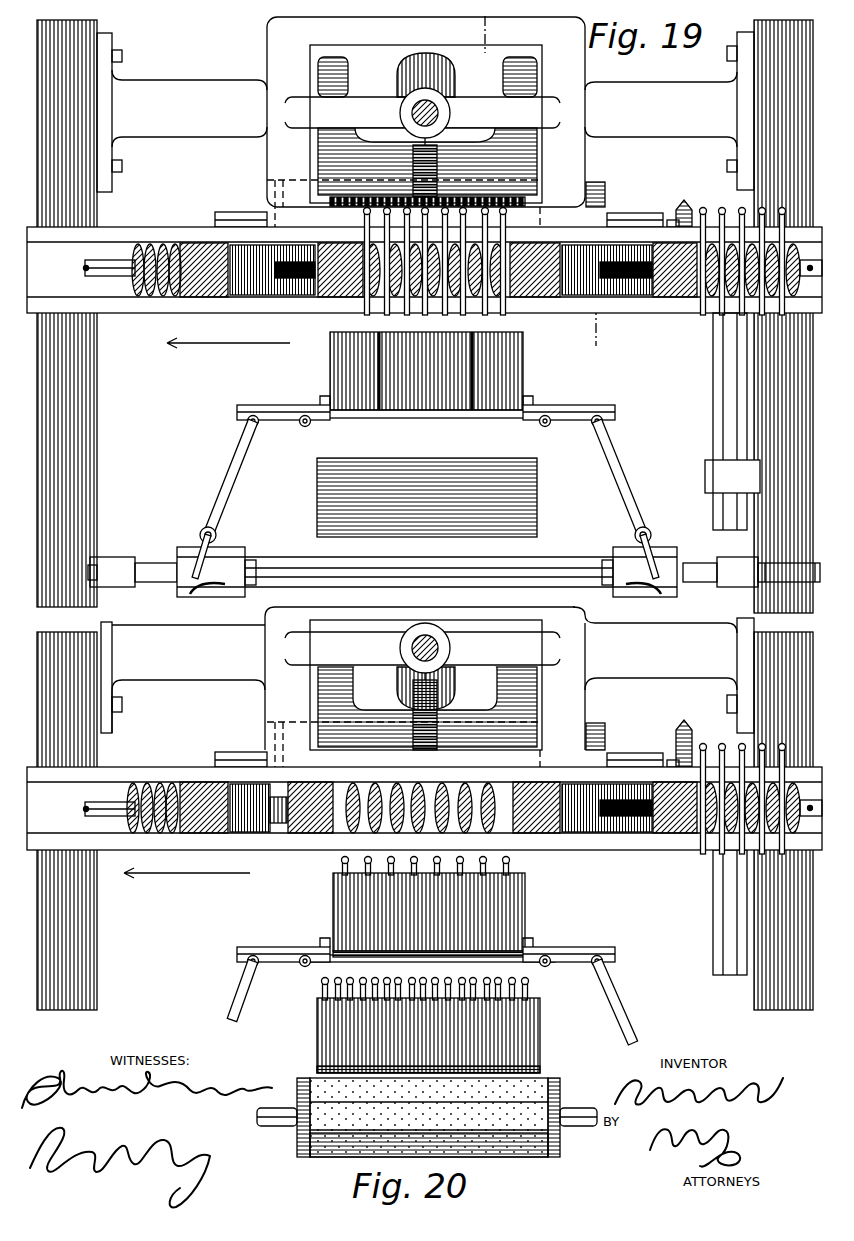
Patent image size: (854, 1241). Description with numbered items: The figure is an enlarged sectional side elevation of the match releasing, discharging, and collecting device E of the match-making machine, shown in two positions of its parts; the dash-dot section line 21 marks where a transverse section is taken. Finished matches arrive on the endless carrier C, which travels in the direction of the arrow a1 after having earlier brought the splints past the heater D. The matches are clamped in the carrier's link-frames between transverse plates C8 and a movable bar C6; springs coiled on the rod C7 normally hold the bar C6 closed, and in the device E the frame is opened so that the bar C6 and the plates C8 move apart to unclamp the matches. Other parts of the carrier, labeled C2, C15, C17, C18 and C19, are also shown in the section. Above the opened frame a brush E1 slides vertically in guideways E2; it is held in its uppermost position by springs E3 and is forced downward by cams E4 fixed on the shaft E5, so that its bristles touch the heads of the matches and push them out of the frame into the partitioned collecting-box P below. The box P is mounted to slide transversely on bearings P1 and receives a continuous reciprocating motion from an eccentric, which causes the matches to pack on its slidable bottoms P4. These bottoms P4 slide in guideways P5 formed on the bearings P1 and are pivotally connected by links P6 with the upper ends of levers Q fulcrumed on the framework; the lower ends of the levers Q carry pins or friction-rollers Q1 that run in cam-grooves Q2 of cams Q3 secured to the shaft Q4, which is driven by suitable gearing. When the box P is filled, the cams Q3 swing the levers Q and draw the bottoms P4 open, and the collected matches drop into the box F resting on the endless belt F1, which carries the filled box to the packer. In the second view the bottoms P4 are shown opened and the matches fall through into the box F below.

In FIG. 19, the releasing, discharging, and collecting device E is at (424, 112).
In FIG. 20, the releasing, discharging, and collecting device E is at (424, 678).
In FIG. 19, the brush E1 is at (520, 192).
In FIG. 20, the brush E1 is at (487, 743).
In FIG. 19, the guideways E2 is at (423, 124).
In FIG. 20, the guideways E2 is at (282, 698).
In FIG. 19, the springs E3 is at (433, 157).
In FIG. 20, the springs E3 is at (417, 712).
In FIG. 19, the cams E4 is at (444, 75).
In FIG. 20, the cams E4 is at (452, 691).
In FIG. 19, the shaft E5 is at (410, 112).
In FIG. 20, the shaft E5 is at (445, 634).
In FIG. 19, the section line 21 is at (538, 185).
In FIG. 19, the heater D is at (600, 206).
In FIG. 20, the heater D is at (601, 738).
In FIG. 19, the endless carrier C is at (146, 215).
In FIG. 20, the endless carrier C is at (424, 798).
In FIG. 19, the slide block C2 is at (156, 297).
In FIG. 20, the slide block C2 is at (137, 759).
In FIG. 19, the bar C6 is at (335, 295).
In FIG. 20, the bar C6 is at (312, 832).
In FIG. 19, the rod C7 is at (86, 267).
In FIG. 20, the rod C7 is at (88, 809).
In FIG. 19, the plates C8 is at (712, 313).
In FIG. 20, the plates C8 is at (732, 832).
In FIG. 19, the sliding collar C15 is at (208, 296).
In FIG. 20, the sliding collar C15 is at (213, 834).
In FIG. 20, the rod C17 is at (650, 784).
In FIG. 19, the spiral spring C18 is at (136, 297).
In FIG. 20, the spiral spring C18 is at (133, 834).
In FIG. 19, the compression spring C19 is at (265, 296).
In FIG. 20, the compression spring C19 is at (263, 834).
In FIG. 19, the arrows a1 is at (228, 352).
In FIG. 20, the arrows a1 is at (187, 865).
In FIG. 19, the collecting-box P is at (332, 372).
In FIG. 20, the collecting-box P is at (332, 897).
In FIG. 19, the bearings P1 is at (302, 405).
In FIG. 20, the bearings P1 is at (325, 946).
In FIG. 19, the slidable bottoms P4 is at (396, 418).
In FIG. 20, the slidable bottoms P4 is at (304, 918).
In FIG. 19, the guideways P5 is at (247, 418).
In FIG. 20, the guideways P5 is at (268, 948).
In FIG. 19, the links P6 is at (283, 426).
In FIG. 20, the links P6 is at (278, 964).
In FIG. 19, the box F is at (538, 492).
In FIG. 20, the box F is at (540, 1040).
In FIG. 20, the endless belt F1 is at (534, 1160).
In FIG. 19, the levers Q is at (227, 477).
In FIG. 20, the levers Q is at (238, 1004).
In FIG. 19, the pins or friction-rollers Q1 is at (187, 590).
In FIG. 19, the cam-grooves Q2 is at (213, 592).
In FIG. 19, the cams Q3 is at (233, 548).
In FIG. 19, the shaft Q4 is at (304, 538).